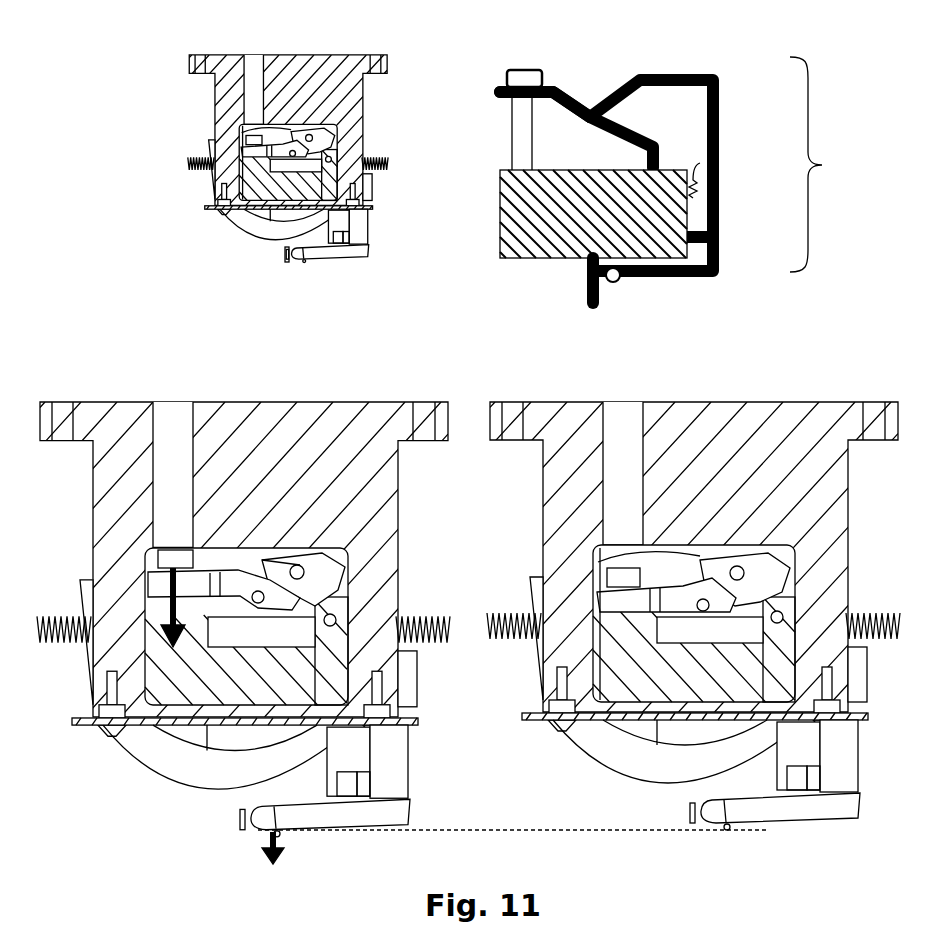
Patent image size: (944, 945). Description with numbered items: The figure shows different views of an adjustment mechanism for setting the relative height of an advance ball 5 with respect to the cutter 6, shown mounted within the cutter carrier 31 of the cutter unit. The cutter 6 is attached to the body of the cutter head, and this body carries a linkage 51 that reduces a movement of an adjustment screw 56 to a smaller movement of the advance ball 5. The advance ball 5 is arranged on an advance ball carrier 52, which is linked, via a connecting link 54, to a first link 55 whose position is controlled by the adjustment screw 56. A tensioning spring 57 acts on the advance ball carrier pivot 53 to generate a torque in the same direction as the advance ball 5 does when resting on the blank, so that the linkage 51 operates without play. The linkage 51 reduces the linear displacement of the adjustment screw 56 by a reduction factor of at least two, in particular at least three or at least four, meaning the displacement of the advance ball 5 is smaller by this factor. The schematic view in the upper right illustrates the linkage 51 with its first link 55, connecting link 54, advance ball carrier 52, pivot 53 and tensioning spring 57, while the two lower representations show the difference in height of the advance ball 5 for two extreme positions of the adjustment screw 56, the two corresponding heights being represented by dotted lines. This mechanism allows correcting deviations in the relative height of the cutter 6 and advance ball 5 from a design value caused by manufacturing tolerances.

The cutter carrier 31 is at (322, 402).
The linkage 51 is at (681, 164).
The advance ball carrier 52 is at (322, 570).
The advance ball carrier pivot 53 is at (715, 250).
The connecting link 54 is at (300, 565).
The first link 55 is at (160, 581).
The adjustment screw 56 is at (160, 557).
The tensioning spring 57 is at (705, 163).
The advance ball 5 is at (616, 283).
The cutter 6 is at (588, 292).